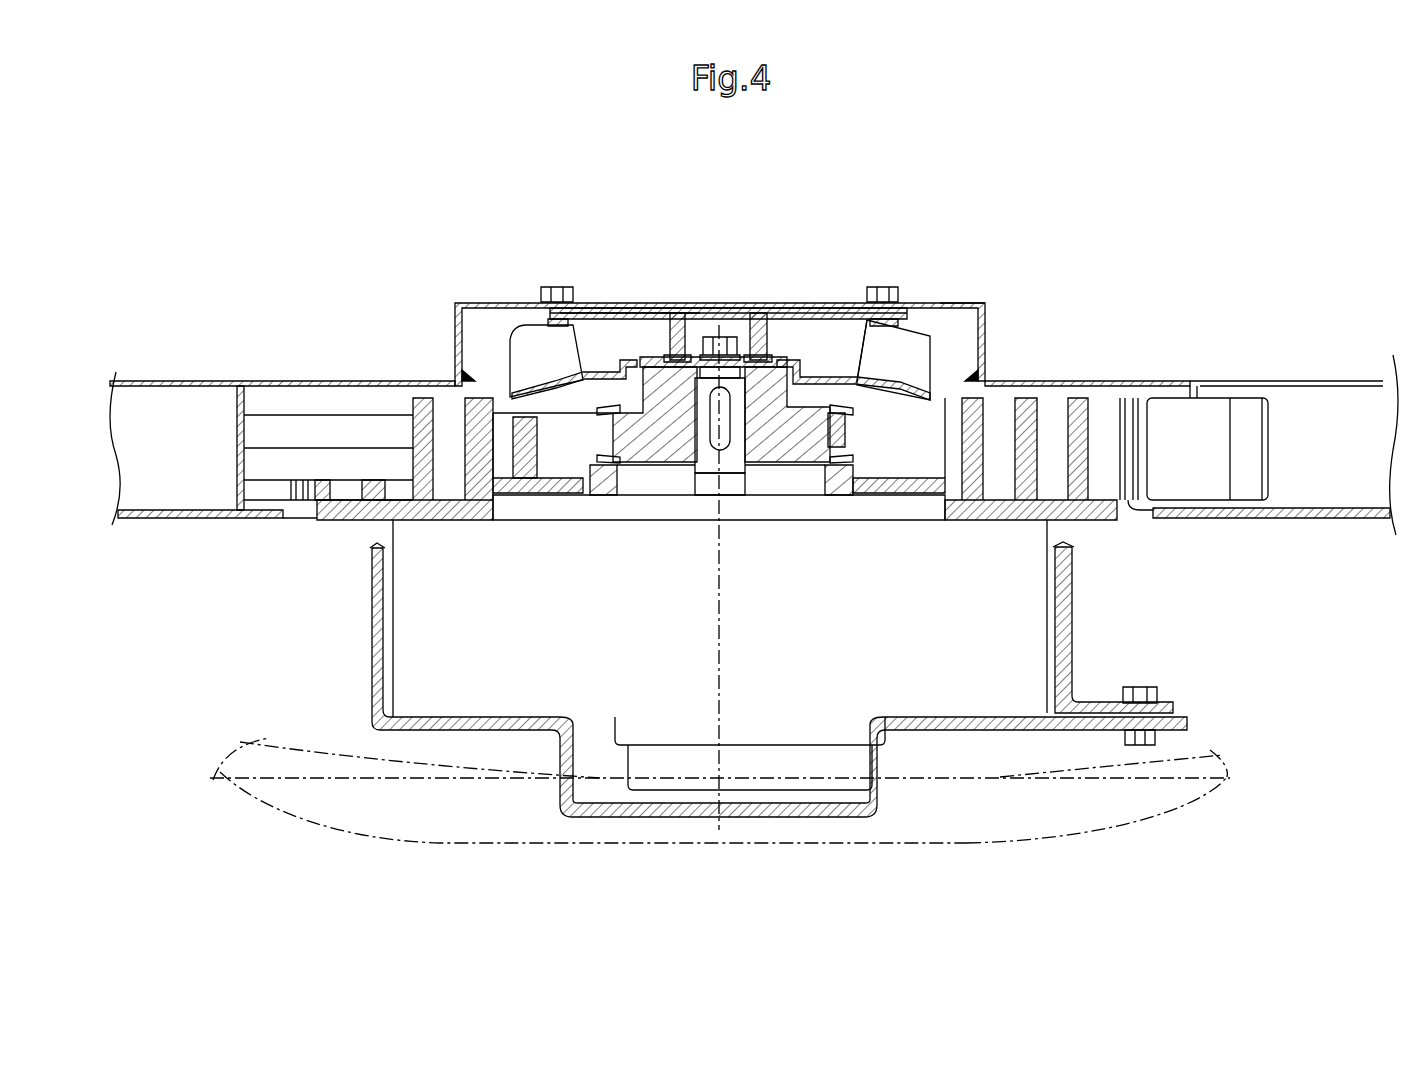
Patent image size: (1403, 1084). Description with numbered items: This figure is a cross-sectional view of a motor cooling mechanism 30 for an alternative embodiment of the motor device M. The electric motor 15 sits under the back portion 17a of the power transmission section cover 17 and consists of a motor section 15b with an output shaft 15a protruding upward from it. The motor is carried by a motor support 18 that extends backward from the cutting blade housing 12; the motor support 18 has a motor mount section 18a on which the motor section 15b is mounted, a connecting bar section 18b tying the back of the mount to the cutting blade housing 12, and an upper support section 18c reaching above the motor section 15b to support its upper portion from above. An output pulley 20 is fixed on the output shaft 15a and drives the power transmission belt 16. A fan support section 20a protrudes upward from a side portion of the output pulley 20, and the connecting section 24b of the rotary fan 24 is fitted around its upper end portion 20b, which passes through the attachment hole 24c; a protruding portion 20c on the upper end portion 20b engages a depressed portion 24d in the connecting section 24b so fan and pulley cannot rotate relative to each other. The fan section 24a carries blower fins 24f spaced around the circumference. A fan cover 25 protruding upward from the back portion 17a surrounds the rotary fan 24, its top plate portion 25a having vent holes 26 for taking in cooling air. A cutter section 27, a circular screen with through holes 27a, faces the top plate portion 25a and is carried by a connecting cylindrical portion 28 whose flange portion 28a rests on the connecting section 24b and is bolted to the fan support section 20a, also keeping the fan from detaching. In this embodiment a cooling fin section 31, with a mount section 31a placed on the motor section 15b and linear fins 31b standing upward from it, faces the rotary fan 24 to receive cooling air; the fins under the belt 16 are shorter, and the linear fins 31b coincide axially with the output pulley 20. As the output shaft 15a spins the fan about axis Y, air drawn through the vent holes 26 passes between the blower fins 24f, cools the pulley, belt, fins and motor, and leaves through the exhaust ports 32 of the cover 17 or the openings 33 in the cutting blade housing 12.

The cutting blade housing 12 is at (197, 518).
The electric motor 15 is at (1050, 608).
The output shaft 15a is at (747, 483).
The motor section 15b is at (977, 630).
The power transmission belt 16 is at (573, 430).
The power transmission section cover 17 is at (171, 380).
The back portion 17a is at (1164, 379).
The motor support 18 is at (785, 865).
The motor mount section 18a is at (553, 755).
The connecting bar section 18b is at (900, 843).
The upper support section 18c is at (372, 607).
The output pulley 20 is at (847, 431).
The fan support section 20a is at (533, 355).
The upper end portion 20b is at (627, 367).
The protruding portion 20c is at (770, 367).
The rotary fan 24 is at (942, 359).
The fan section 24a is at (955, 320).
The connecting section 24b is at (823, 378).
The attachment hole 24c is at (776, 320).
The depressed portion 24d is at (800, 249).
The blower fins 24f is at (520, 350).
The fan cover 25 is at (936, 301).
The top plate portion 25a is at (586, 306).
The vent holes 26 is at (757, 308).
The cutter section 27 is at (859, 312).
The through holes 27a is at (650, 312).
The connecting cylindrical portion 28 is at (735, 308).
The flange portion 28a is at (670, 305).
The motor cooling mechanism 30 is at (1200, 545).
The cooling fin section 31 is at (1236, 440).
The mount section 31a is at (441, 505).
The linear fins 31b is at (477, 407).
The exhaust ports 32 is at (236, 484).
The openings 33 is at (292, 505).
The motor device M is at (1097, 222).
The axis Y is at (719, 300).